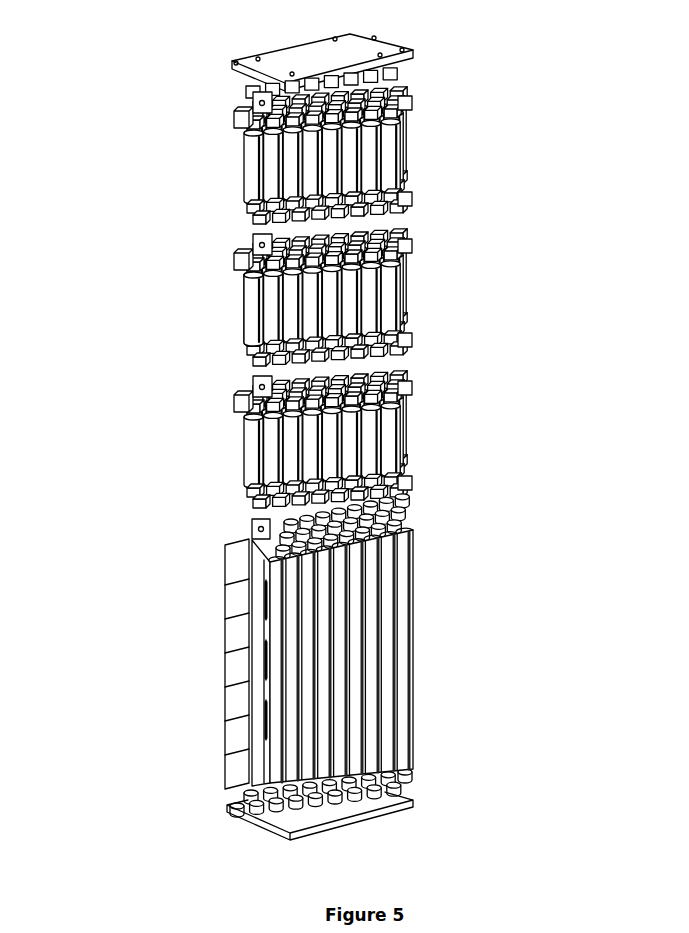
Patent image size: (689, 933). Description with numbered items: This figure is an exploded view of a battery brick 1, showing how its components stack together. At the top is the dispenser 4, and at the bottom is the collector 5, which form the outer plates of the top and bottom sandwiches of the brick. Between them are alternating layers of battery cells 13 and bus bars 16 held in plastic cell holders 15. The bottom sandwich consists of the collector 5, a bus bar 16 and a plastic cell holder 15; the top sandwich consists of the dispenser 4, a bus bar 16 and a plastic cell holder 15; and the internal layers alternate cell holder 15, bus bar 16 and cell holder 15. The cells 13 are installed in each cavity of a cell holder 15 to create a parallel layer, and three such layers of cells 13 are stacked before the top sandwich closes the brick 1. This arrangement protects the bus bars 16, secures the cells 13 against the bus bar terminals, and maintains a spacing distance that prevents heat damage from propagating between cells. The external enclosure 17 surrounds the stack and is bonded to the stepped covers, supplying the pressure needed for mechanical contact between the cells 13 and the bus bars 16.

The battery brick 1 is at (425, 630).
The dispenser 4 is at (232, 62).
The collector 5 is at (227, 808).
The battery cell 13 is at (262, 308).
The plastic cell holder 15 is at (410, 103).
The bus bar 16 is at (250, 95).
The external enclosure 17 is at (225, 663).